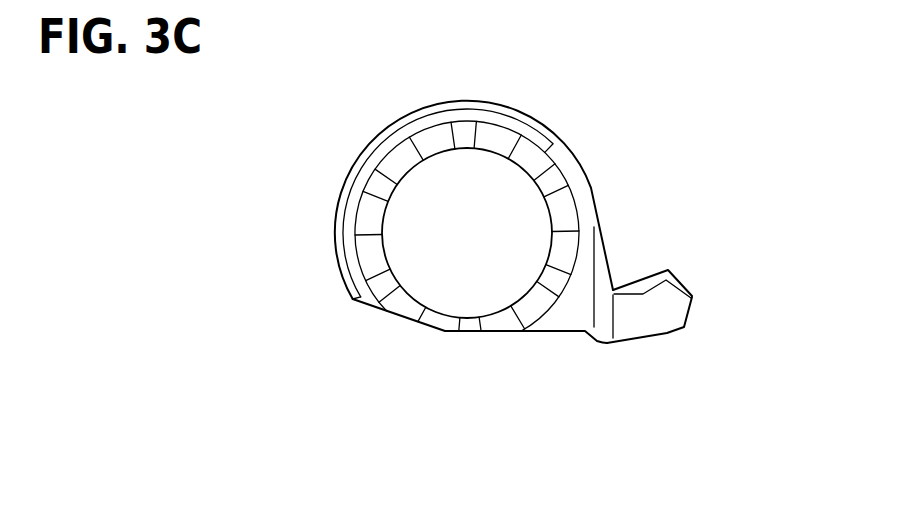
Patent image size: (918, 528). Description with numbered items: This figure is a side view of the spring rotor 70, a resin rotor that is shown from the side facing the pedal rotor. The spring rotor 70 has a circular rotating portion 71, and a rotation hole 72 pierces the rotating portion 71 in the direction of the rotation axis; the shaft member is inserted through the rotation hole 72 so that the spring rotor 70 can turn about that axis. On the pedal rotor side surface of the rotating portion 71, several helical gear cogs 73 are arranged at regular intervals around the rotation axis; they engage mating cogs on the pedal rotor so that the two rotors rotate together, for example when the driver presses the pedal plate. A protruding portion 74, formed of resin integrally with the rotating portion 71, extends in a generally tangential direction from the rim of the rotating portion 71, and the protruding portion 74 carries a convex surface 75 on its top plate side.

The spring rotor 70 is at (339, 204).
The rotating portion 71 is at (392, 126).
The rotation hole 72 is at (417, 167).
The helical gear cogs 73 is at (561, 236).
The protruding portion 74 is at (667, 333).
The convex surface 75 is at (665, 268).